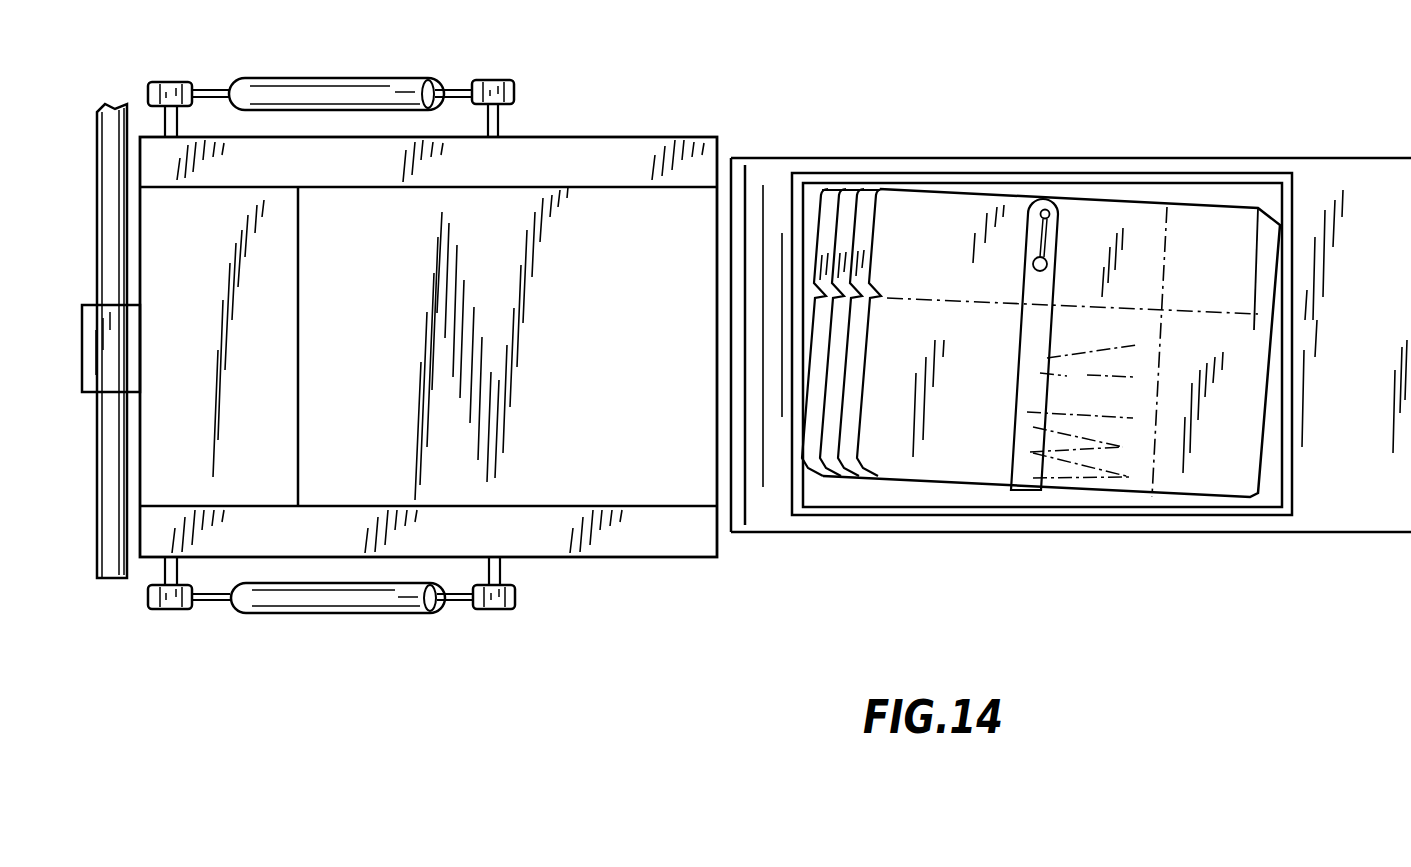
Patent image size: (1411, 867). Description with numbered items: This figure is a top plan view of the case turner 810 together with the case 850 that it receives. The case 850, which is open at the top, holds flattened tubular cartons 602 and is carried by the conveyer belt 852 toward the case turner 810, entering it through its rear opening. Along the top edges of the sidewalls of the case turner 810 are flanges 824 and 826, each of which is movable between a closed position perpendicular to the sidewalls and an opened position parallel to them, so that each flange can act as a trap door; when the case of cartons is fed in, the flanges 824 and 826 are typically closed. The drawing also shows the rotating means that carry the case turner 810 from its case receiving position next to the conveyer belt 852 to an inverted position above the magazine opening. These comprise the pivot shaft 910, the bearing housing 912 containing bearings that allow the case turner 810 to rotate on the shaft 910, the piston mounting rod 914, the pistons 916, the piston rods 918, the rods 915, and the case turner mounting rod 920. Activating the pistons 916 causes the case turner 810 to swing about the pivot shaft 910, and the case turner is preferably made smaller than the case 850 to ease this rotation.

The flattened tubular cartons 602 is at (1220, 470).
The case turner 810 is at (592, 560).
The flange 824 is at (685, 553).
The flange 826 is at (685, 140).
The case 850 is at (1188, 533).
The conveyer belt 852 is at (1353, 173).
The pivot shaft 910 is at (103, 582).
The bearing housing 912 is at (132, 352).
The piston mounting rod 914 is at (178, 119).
The rods 915 is at (204, 604).
The pistons 916 is at (393, 613).
The piston rods 918 is at (453, 77).
The case turner mounting rod 920 is at (500, 122).